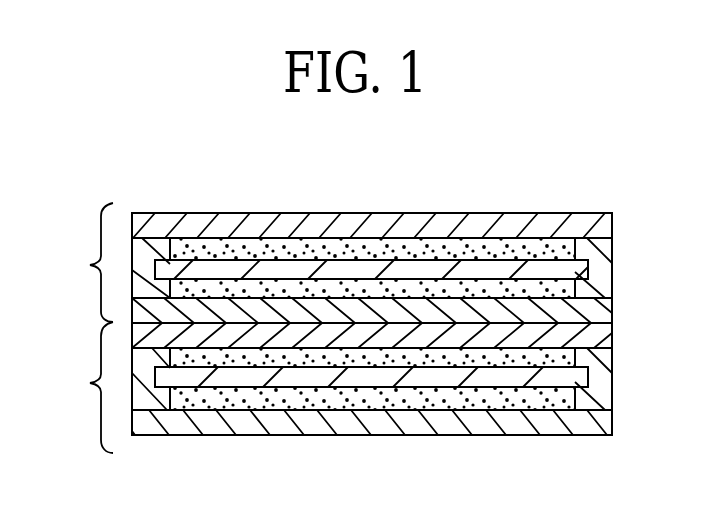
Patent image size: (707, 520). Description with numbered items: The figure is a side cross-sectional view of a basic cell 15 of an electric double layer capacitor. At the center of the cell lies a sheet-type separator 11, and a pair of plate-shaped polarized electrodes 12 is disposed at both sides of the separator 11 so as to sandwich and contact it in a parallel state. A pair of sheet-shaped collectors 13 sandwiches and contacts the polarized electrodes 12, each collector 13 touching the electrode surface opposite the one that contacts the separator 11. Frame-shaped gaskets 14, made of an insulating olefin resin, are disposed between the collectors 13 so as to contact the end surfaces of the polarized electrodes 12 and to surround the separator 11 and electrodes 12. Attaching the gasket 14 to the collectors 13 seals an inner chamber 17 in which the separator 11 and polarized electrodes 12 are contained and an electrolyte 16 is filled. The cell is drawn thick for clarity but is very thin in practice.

The separator 11 is at (408, 268).
The polarized electrode 12 is at (348, 247).
The collector 13 is at (288, 222).
The gasket 14 is at (615, 252).
The basic cell 15 is at (80, 328).
The electrolyte 16 is at (226, 250).
The inner chamber 17 is at (172, 252).